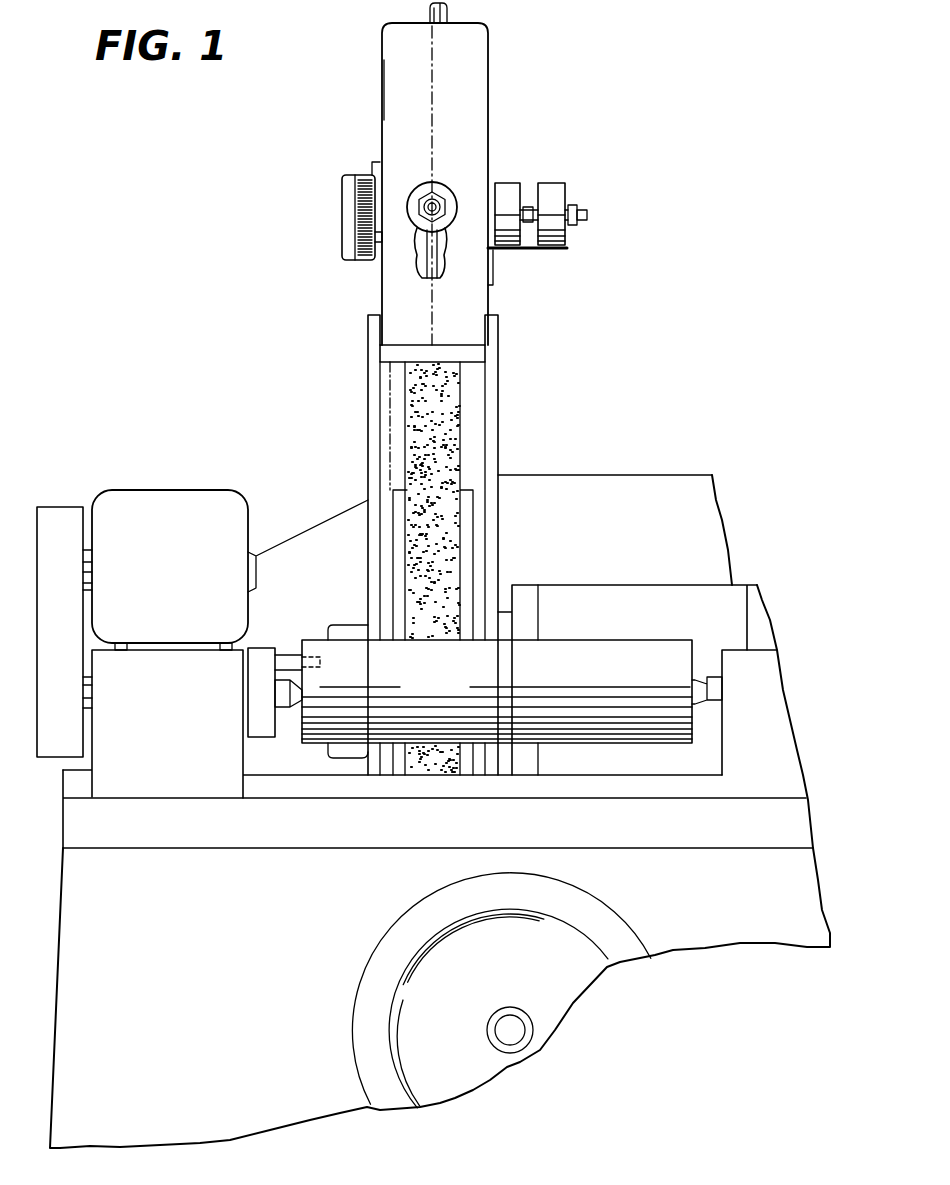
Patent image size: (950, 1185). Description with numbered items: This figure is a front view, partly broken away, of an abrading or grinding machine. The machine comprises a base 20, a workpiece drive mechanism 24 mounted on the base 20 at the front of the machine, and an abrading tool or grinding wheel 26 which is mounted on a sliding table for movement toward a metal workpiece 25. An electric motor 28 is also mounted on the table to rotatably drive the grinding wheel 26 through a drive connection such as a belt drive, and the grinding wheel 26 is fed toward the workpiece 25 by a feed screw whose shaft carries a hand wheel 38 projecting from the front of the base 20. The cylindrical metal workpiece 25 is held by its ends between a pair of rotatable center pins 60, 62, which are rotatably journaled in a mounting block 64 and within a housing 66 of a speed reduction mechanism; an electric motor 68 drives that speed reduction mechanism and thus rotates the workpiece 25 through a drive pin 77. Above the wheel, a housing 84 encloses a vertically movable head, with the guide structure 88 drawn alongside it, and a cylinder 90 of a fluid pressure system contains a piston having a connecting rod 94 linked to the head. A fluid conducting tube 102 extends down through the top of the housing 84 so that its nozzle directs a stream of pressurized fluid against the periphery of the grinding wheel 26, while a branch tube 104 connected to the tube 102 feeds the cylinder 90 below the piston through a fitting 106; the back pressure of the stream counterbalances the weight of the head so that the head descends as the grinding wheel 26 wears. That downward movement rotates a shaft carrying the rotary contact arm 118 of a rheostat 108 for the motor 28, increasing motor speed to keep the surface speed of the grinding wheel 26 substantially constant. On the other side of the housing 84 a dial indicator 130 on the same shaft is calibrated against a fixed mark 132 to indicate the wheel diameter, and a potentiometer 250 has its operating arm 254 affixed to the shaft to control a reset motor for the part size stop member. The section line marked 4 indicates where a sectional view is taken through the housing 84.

The base 20 is at (260, 1108).
The workpiece drive mechanism 24 is at (80, 498).
The metal workpiece 25 is at (603, 650).
The grinding wheel 26 is at (443, 453).
The electric motor 28 is at (580, 597).
The hand wheel 38 is at (363, 1015).
The rotatable center pin 60 is at (277, 713).
The rotatable center pin 62 is at (713, 688).
The mounting block 64 is at (775, 785).
The housing 66 is at (178, 787).
The electric motor 68 is at (170, 510).
The drive pin 77 is at (288, 658).
The housing 84 is at (480, 43).
The guide frame 88 is at (493, 383).
The cylinder 90 is at (440, 223).
The connecting rod 94 is at (427, 248).
The fluid conducting tube 102 is at (437, 23).
The branch tube 104 is at (440, 187).
The fitting 106 is at (427, 185).
The rheostat 108 is at (507, 183).
The rotary contact arm 118 is at (533, 227).
The dial indicator 130 is at (347, 200).
The fixed mark 132 is at (388, 92).
The potentiometer 250 is at (560, 183).
The operating arm 254 is at (567, 233).
The section line 4- 4 is at (462, 8).